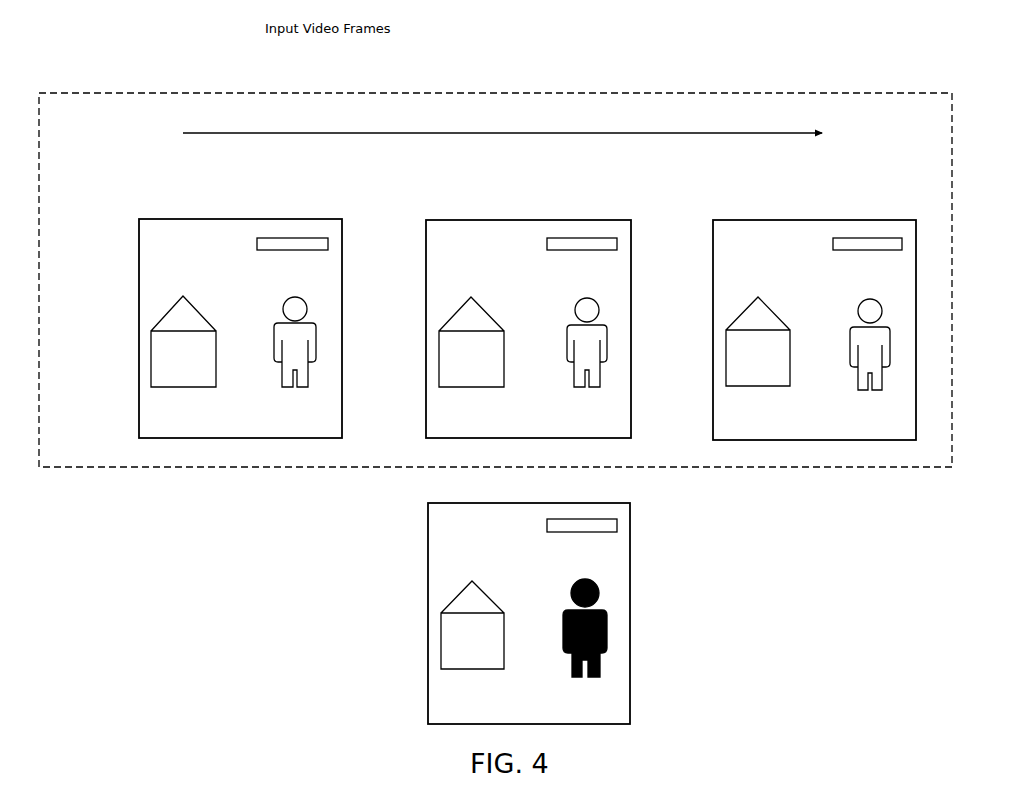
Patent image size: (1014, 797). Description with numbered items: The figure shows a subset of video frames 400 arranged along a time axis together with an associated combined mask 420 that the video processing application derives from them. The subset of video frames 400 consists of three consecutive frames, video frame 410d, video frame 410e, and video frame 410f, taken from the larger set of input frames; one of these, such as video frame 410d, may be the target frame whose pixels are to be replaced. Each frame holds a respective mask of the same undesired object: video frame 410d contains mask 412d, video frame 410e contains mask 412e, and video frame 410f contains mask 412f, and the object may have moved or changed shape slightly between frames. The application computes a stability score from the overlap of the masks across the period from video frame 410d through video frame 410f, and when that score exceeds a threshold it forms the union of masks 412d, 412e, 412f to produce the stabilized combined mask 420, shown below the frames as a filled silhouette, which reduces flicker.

The subset of video frames 400 is at (495, 280).
The video frame 410d is at (136, 216).
The video frame 410e is at (423, 217).
The video frame 410f is at (711, 218).
The mask 412d is at (277, 299).
The mask 412e is at (563, 298).
The mask 412f is at (848, 300).
The combined mask 420 is at (606, 594).